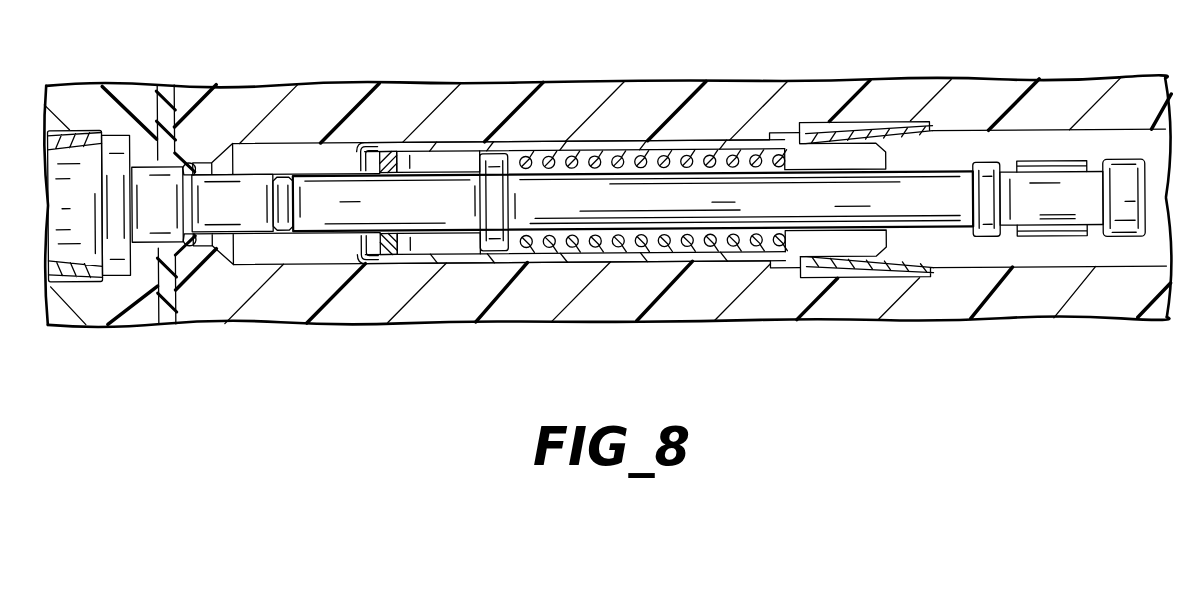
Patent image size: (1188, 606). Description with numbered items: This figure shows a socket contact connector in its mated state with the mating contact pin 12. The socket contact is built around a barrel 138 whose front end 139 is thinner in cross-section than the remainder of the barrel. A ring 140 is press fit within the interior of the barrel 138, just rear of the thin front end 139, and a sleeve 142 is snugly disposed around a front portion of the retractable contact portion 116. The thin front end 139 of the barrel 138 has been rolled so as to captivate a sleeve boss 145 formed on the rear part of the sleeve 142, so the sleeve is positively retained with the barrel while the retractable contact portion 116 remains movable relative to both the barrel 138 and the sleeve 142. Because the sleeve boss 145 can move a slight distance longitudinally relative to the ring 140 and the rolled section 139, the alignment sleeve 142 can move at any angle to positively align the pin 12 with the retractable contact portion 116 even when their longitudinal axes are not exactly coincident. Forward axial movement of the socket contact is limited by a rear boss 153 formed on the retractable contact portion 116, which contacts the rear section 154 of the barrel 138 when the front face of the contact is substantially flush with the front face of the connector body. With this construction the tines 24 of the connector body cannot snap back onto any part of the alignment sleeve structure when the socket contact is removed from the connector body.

The mating contact pin 12 is at (237, 205).
The tines 24 is at (884, 130).
The retractable contact portion 116 is at (718, 195).
The barrel 138 is at (567, 145).
The front end of the barrel 139 is at (357, 253).
The ring 140 is at (432, 253).
The sleeve 142 is at (268, 170).
The sleeve boss 145 is at (381, 150).
The rear boss 153 is at (987, 215).
The rear section of the barrel 154 is at (813, 167).